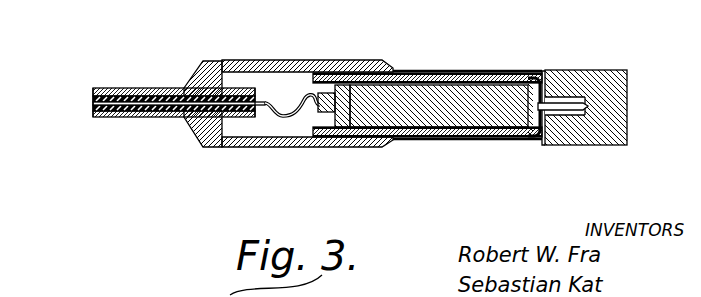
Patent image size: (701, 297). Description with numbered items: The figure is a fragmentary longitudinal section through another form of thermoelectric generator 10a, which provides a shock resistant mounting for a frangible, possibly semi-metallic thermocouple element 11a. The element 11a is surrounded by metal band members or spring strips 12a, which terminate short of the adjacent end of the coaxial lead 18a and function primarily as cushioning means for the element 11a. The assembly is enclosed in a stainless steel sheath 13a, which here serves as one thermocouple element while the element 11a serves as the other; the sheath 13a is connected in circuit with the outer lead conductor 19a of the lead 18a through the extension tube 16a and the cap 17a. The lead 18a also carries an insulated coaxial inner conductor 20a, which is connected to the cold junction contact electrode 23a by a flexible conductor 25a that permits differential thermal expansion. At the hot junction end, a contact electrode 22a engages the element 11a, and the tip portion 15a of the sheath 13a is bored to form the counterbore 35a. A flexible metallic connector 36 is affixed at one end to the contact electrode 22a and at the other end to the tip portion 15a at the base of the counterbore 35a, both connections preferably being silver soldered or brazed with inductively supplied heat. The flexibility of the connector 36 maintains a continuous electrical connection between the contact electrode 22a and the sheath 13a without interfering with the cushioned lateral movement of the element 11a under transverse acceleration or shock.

The thermoelectric generator 10a is at (284, 150).
The thermocouple element 11a is at (415, 98).
The spring strips 12a is at (481, 73).
The sheath 13a is at (438, 143).
The tip portion 15a is at (613, 128).
The extension tube 16a is at (301, 146).
The cap 17a is at (205, 76).
The coaxial lead 18a is at (145, 121).
The outer lead conductor 19a is at (96, 89).
The inner conductor 20a is at (93, 103).
The contact electrode 22a is at (529, 80).
The contact electrode 23a is at (345, 84).
The flexible conductor 25a is at (282, 106).
The counterbore 35a is at (580, 112).
The flexible metallic connector 36 is at (566, 100).